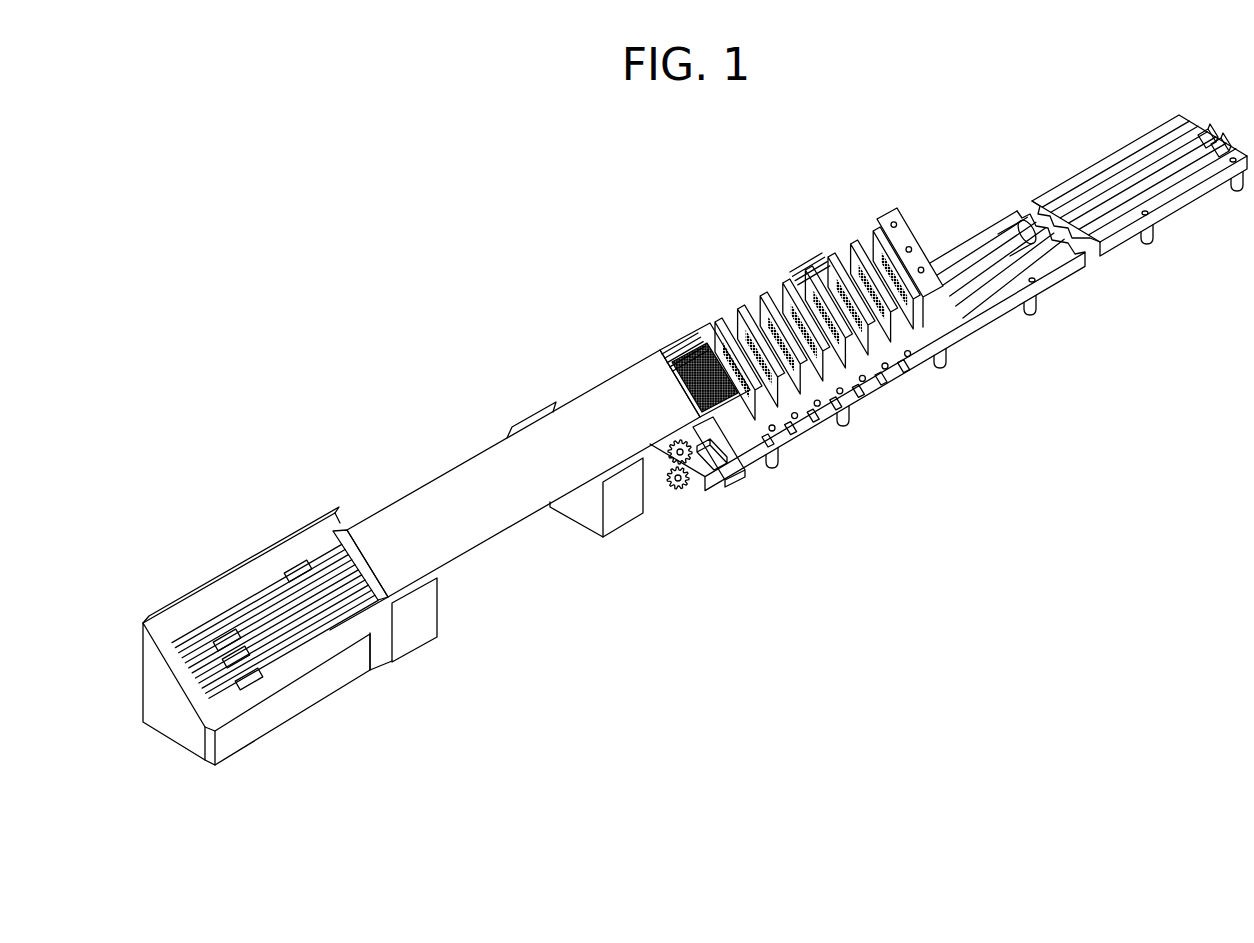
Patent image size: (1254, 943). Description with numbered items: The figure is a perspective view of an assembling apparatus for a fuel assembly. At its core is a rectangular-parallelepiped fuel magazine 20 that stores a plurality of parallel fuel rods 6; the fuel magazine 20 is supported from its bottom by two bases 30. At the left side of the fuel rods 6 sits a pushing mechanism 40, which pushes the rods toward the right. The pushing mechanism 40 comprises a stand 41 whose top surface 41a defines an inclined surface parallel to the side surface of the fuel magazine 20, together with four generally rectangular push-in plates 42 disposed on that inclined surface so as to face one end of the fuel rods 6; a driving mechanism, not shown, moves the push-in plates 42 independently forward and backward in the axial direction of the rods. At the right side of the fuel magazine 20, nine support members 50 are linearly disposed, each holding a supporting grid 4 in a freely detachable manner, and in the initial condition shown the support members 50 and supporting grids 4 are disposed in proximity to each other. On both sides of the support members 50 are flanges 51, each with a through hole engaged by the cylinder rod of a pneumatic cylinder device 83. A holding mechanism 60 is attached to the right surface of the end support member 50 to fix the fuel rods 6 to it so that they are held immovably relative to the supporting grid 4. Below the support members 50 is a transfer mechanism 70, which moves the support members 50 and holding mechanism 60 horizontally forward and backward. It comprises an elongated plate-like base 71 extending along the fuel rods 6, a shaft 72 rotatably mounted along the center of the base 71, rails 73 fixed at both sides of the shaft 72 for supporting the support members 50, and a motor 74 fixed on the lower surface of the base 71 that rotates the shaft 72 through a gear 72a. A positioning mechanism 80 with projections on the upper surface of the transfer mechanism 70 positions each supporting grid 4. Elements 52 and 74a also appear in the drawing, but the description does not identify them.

The supporting grid 4 is at (706, 330).
The fuel rods 6 is at (343, 532).
The fuel magazine 20 is at (432, 462).
The bases 30 is at (590, 548).
The pushing mechanism 40 is at (244, 636).
The stand 41 is at (172, 736).
The top surface 41a is at (172, 628).
The push-in plates 42 is at (298, 565).
The support members 50 is at (762, 296).
The flanges 51 is at (800, 436).
The fitting portion 52 is at (752, 470).
The holding mechanism 60 is at (915, 226).
The transfer mechanism 70 is at (926, 346).
The base 71 is at (1135, 174).
The shaft 72 is at (1012, 232).
The gear 72a is at (668, 462).
The rails 73 is at (1196, 128).
The motor 74 is at (728, 521).
The cam block 74a is at (703, 490).
The positioning mechanism 80 is at (1004, 375).
The pneumatic cylinder device 83 is at (803, 440).